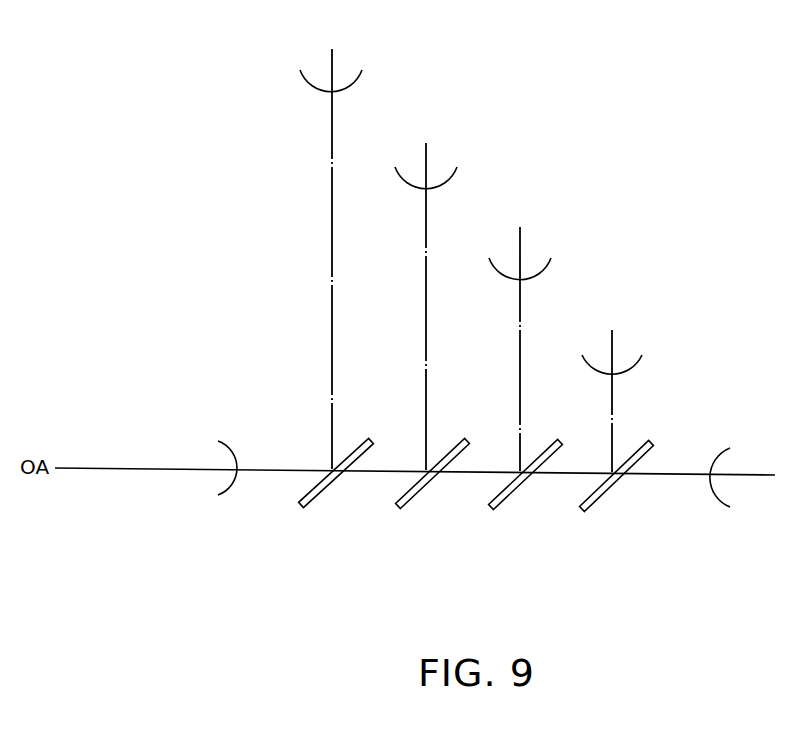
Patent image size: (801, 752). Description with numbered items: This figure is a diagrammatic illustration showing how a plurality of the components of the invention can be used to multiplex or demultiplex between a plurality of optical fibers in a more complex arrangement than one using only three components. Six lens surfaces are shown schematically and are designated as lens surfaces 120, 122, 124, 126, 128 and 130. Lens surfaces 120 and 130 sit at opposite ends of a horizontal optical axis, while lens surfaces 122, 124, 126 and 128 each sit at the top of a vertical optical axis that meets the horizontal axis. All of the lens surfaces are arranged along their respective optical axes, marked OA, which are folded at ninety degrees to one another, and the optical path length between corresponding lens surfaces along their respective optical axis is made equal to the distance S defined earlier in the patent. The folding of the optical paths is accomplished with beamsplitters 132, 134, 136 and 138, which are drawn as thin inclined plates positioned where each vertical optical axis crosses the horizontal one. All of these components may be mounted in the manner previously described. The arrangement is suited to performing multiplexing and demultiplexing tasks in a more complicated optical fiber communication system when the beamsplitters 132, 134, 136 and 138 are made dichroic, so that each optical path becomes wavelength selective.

The lens surface 120 is at (236, 462).
The lens surface 122 is at (357, 81).
The lens surface 124 is at (452, 177).
The lens surface 126 is at (550, 272).
The lens surface 128 is at (640, 363).
The lens surface 130 is at (711, 465).
The beamsplitter 132 is at (312, 500).
The beamsplitter 134 is at (403, 501).
The beamsplitter 136 is at (497, 502).
The beamsplitter 138 is at (592, 504).